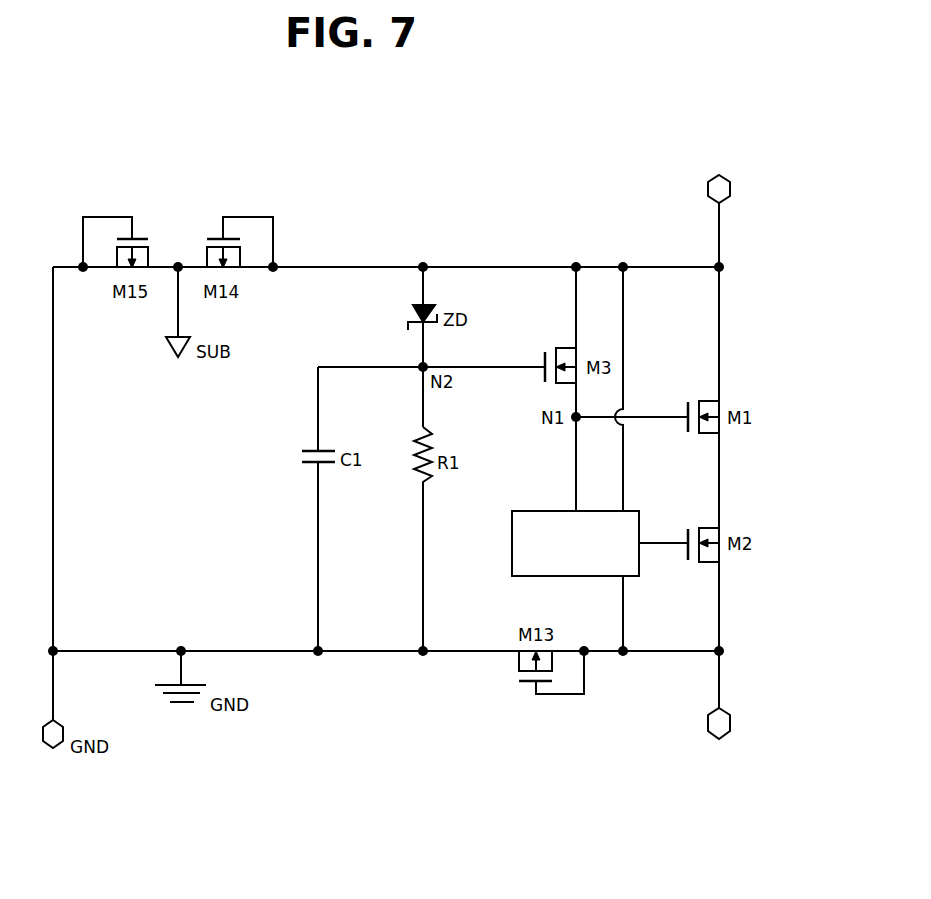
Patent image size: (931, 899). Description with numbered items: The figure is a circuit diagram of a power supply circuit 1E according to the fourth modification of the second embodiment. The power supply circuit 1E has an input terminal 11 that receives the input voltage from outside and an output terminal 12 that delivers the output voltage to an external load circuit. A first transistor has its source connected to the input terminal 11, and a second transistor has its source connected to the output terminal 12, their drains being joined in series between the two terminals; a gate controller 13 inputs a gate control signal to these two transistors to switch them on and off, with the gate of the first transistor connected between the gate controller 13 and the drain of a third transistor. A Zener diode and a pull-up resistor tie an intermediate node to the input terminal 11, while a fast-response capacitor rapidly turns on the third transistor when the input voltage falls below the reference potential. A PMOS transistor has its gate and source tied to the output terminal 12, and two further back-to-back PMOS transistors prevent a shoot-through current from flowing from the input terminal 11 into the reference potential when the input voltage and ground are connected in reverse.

The power supply circuit 1E is at (479, 148).
The input terminal 11 is at (730, 190).
The output terminal 12 is at (730, 726).
The gate controller 13 is at (543, 511).